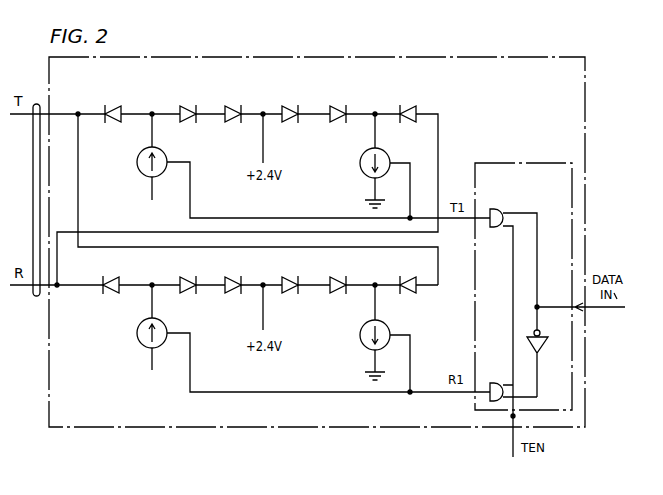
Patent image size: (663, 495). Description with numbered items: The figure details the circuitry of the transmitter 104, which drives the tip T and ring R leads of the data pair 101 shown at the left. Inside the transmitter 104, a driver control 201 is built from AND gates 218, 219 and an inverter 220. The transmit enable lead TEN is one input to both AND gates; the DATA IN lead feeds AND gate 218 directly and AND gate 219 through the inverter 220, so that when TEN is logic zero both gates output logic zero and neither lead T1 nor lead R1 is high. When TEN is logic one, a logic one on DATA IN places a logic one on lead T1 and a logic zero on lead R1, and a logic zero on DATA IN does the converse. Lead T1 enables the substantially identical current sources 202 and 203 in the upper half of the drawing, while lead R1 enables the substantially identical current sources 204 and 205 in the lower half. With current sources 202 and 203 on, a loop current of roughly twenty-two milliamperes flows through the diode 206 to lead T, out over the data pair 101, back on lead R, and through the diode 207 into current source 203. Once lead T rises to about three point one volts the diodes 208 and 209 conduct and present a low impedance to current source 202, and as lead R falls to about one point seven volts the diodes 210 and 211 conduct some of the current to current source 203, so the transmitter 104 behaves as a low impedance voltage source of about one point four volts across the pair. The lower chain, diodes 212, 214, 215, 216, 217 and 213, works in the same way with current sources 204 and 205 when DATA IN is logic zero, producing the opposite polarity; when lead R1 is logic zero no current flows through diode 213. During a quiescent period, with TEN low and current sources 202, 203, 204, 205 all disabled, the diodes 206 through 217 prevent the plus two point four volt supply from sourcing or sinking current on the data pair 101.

The data pair 101 is at (38, 296).
The transmitter 104 is at (240, 57).
The driver control 201 is at (486, 163).
The current source 202 is at (137, 162).
The current source 203 is at (360, 165).
The current source 204 is at (137, 333).
The current source 205 is at (360, 335).
The diode 206 is at (115, 106).
The diode 207 is at (411, 106).
The diode 208 is at (190, 106).
The diode 209 is at (235, 106).
The diode 210 is at (292, 106).
The diode 211 is at (340, 106).
The diode 212 is at (114, 277).
The diode 213 is at (411, 277).
The diode 214 is at (190, 277).
The diode 215 is at (235, 277).
The diode 216 is at (292, 277).
The diode 217 is at (340, 277).
The AND gate 218 is at (494, 228).
The AND gate 219 is at (496, 382).
The inverter 220 is at (544, 343).